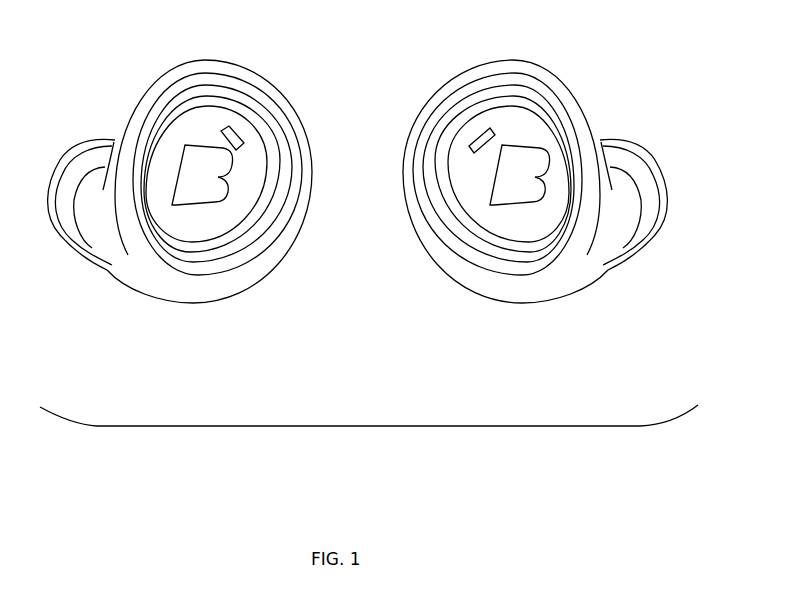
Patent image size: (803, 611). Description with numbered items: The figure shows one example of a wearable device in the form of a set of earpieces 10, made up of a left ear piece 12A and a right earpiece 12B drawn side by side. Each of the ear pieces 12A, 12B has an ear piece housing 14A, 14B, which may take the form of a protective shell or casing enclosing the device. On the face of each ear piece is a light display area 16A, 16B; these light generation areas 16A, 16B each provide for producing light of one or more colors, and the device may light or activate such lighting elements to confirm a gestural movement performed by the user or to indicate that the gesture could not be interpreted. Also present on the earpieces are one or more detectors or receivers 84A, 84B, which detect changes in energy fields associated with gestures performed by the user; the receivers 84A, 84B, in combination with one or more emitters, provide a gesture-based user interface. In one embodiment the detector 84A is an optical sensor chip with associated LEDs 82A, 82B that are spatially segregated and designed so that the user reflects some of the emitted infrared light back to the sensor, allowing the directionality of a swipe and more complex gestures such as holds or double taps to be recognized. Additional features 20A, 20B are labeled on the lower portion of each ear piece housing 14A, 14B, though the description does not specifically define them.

The set of earpieces 10 is at (352, 427).
The left ear piece 12A is at (209, 168).
The right earpiece 12B is at (505, 172).
The ear piece housing 14A is at (236, 189).
The ear piece housing 14B is at (535, 197).
The light display area 16A is at (254, 162).
The light display area 16B is at (528, 147).
The first earbud lower housing portion 20A is at (217, 227).
The second earbud lower housing portion 20B is at (497, 220).
The LEDs 82A is at (141, 223).
The second earbud logo indicator 82B is at (453, 230).
The detector 84A is at (256, 181).
The receiver 84B is at (571, 195).